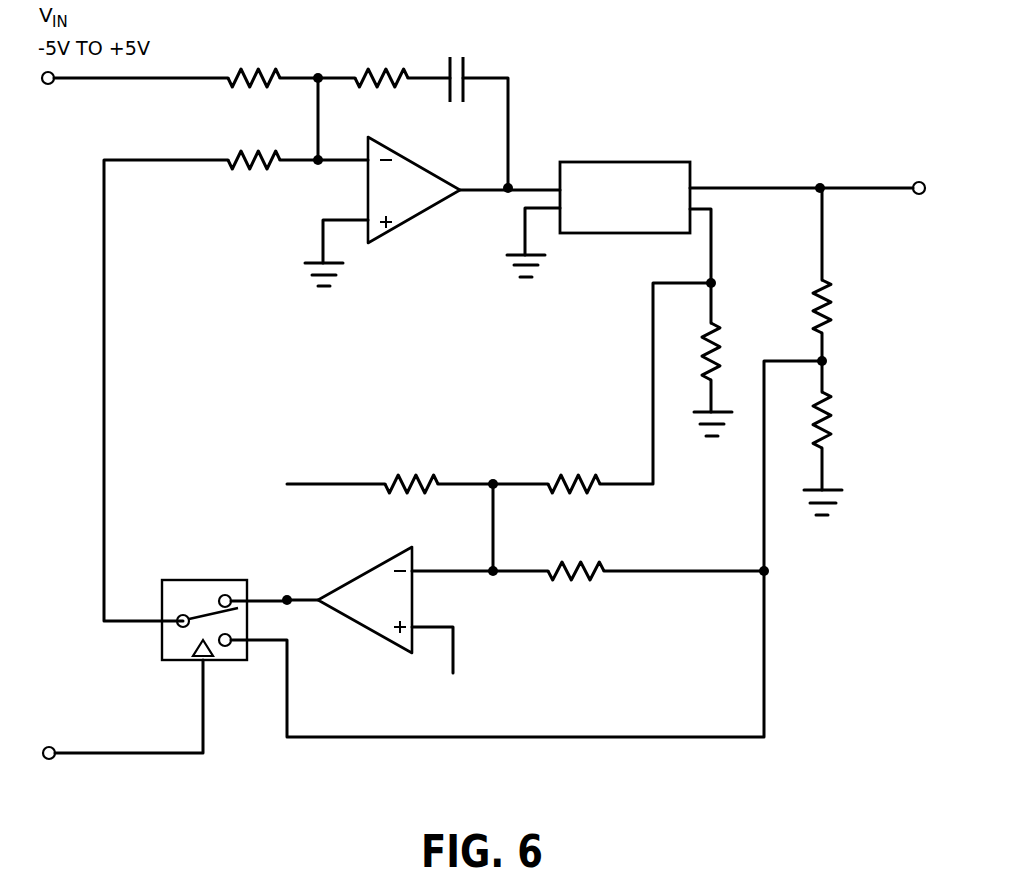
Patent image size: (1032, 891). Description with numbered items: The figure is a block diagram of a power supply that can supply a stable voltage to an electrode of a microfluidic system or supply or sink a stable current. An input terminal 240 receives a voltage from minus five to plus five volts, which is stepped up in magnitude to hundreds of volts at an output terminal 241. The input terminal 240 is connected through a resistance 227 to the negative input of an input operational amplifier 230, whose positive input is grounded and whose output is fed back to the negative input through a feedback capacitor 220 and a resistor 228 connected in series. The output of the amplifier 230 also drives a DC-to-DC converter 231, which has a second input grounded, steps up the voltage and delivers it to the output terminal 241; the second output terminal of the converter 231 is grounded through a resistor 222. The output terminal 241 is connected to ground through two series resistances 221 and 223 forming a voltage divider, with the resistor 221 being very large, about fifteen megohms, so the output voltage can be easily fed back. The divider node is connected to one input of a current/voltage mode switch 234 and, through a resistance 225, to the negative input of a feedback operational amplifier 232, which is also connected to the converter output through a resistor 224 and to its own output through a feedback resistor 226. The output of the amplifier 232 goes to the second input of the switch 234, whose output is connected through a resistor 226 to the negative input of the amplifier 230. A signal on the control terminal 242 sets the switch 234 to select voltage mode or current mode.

The feedback capacitor 220 is at (455, 52).
The resistance 221 is at (837, 292).
The resistor 222 is at (728, 347).
The resistance 223 is at (835, 413).
The resistor 224 is at (580, 472).
The resistance 225 is at (578, 589).
The resistor 226 is at (249, 177).
The resistance 227 is at (258, 66).
The resistor 228 is at (372, 66).
The input operational amplifier 230 is at (412, 220).
The DC-to-DC converter 231 is at (617, 160).
The feedback operational amplifier 232 is at (358, 627).
The current/voltage mode switch 234 is at (203, 579).
The input terminal 240 is at (48, 86).
The output terminal 241 is at (918, 180).
The control terminal 242 is at (52, 745).